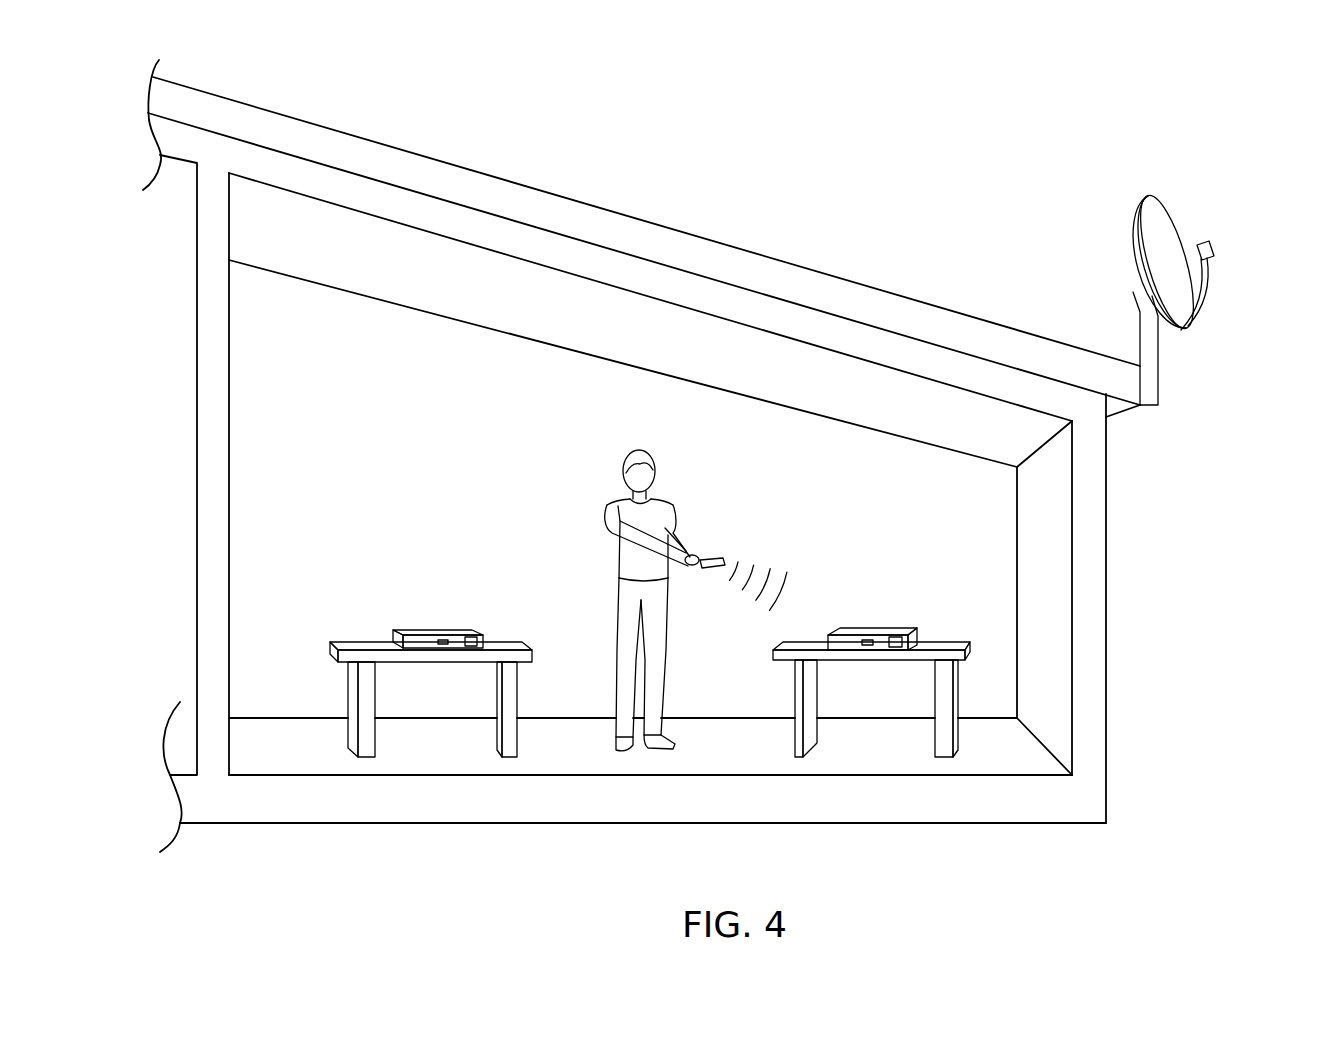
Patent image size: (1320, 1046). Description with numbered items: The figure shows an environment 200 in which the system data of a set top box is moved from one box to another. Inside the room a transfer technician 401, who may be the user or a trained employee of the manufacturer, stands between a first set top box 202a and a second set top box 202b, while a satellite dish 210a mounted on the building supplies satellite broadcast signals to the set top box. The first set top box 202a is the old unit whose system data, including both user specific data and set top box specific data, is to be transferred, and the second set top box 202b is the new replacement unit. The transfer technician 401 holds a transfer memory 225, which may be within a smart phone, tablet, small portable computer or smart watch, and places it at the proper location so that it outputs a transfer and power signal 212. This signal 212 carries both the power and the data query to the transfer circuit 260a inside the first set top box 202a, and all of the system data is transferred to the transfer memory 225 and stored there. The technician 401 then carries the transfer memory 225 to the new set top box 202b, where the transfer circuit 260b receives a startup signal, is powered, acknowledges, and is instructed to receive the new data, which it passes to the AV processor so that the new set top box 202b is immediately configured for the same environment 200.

The environment 200 is at (1064, 122).
The satellite dish 210a is at (1167, 220).
The first set top box 202a is at (883, 669).
The second set top box 202b is at (428, 668).
The transfer circuit 260a is at (868, 638).
The transfer circuit 260b is at (382, 608).
The transfer technician 401 is at (627, 450).
The transfer memory 225 is at (716, 556).
The transfer and power signal 212 is at (778, 554).